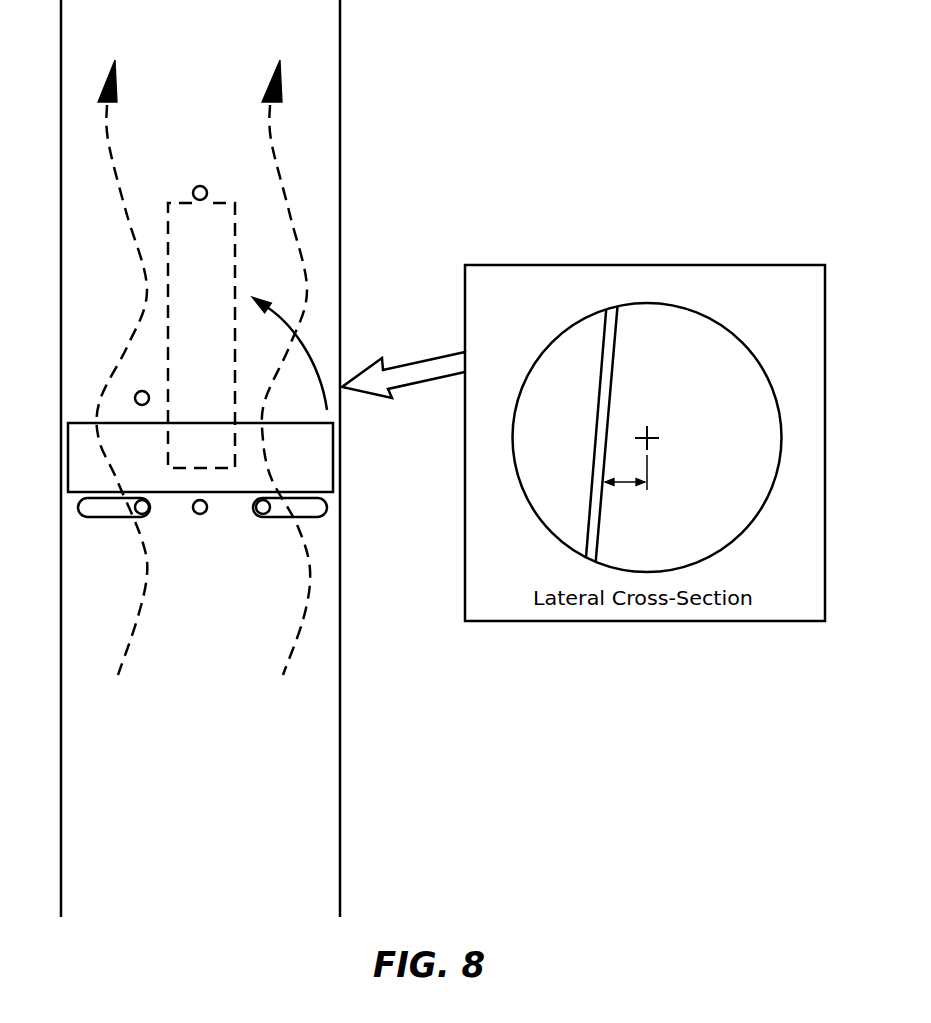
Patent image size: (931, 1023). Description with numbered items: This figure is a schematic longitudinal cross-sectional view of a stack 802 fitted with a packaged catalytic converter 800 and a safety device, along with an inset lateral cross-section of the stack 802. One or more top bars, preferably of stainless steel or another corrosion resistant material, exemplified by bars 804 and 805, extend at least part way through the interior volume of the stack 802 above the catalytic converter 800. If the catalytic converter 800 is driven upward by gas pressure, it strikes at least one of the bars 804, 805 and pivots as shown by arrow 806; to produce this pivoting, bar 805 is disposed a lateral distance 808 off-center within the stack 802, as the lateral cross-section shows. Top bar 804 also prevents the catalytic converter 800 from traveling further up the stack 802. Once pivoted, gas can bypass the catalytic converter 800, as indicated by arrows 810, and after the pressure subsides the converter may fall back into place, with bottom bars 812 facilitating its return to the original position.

The packaged catalytic converter 800 is at (313, 453).
The stack 802 is at (341, 702).
The top bar 804 is at (200, 186).
The top bar 805 is at (140, 392).
The arrow 806 is at (293, 337).
The lateral distance 808 is at (620, 487).
The arrows 810 is at (267, 122).
The bottom bars 812 is at (257, 512).